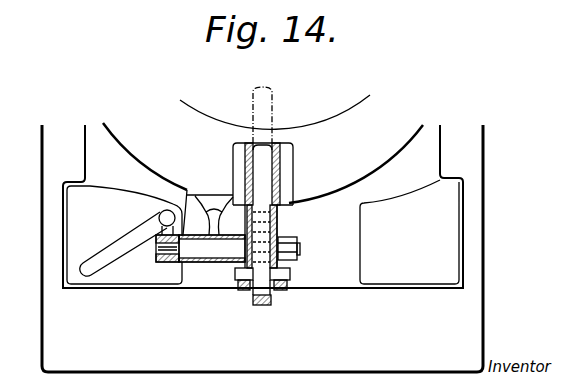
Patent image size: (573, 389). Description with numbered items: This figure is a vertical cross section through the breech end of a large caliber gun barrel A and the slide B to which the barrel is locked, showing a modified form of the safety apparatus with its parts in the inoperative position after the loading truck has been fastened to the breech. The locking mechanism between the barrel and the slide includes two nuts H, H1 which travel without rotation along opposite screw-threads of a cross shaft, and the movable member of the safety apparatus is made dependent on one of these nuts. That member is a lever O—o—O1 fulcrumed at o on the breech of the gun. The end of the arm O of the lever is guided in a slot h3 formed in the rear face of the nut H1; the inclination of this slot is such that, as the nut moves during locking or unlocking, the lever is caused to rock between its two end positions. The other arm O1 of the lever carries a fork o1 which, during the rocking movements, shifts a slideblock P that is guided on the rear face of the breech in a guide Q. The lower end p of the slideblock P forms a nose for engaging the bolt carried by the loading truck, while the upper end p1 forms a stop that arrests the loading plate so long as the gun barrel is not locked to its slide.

The gun barrel A is at (190, 130).
The slide B is at (474, 152).
The nut H is at (443, 222).
The nut H1 is at (77, 210).
The slot h3 is at (108, 255).
The arm of the lever O is at (163, 215).
The fulcrum of the lever o is at (209, 252).
The fork o1 is at (296, 307).
The arm of the lever O1 is at (298, 244).
The slideblock P is at (263, 223).
The lower end of the slideblock p is at (260, 305).
The upper end of the slideblock p1 is at (273, 94).
The guide Q is at (278, 181).